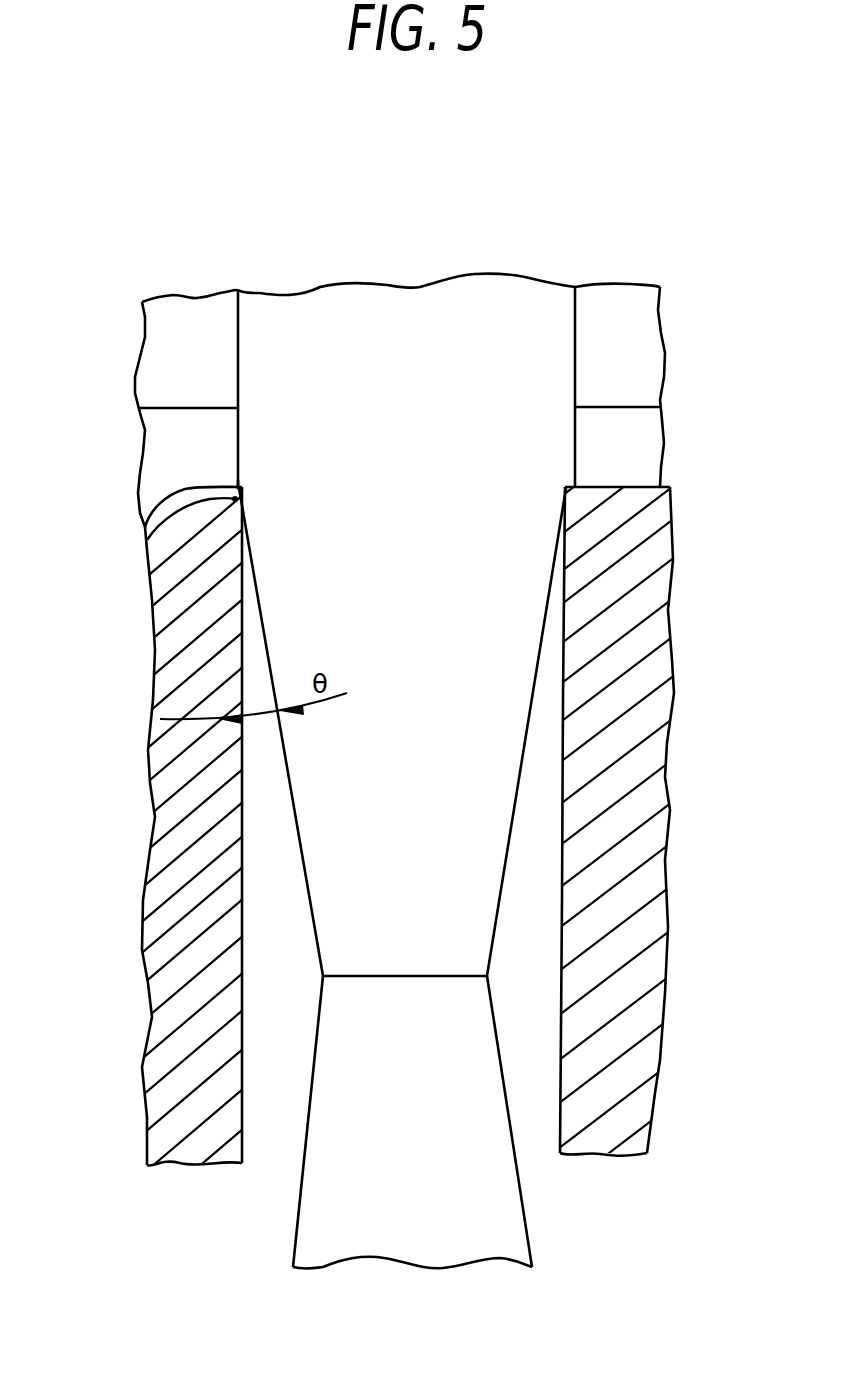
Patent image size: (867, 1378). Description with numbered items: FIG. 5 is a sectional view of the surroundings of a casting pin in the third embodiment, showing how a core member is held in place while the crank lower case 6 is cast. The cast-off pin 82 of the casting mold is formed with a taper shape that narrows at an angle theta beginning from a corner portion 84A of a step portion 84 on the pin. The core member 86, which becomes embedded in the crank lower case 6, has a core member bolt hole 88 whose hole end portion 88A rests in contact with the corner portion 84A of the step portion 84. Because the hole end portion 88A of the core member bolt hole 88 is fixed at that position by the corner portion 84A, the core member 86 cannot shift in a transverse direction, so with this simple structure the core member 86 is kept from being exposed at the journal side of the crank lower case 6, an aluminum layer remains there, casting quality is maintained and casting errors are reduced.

The cast-off pin 82 is at (467, 313).
The step portion 84 is at (240, 474).
The corner portion 84A is at (243, 488).
The crank lower case 6 is at (635, 463).
The core member 86 is at (160, 620).
The core member bolt hole 88 is at (242, 806).
The hole end portion 88A is at (150, 553).